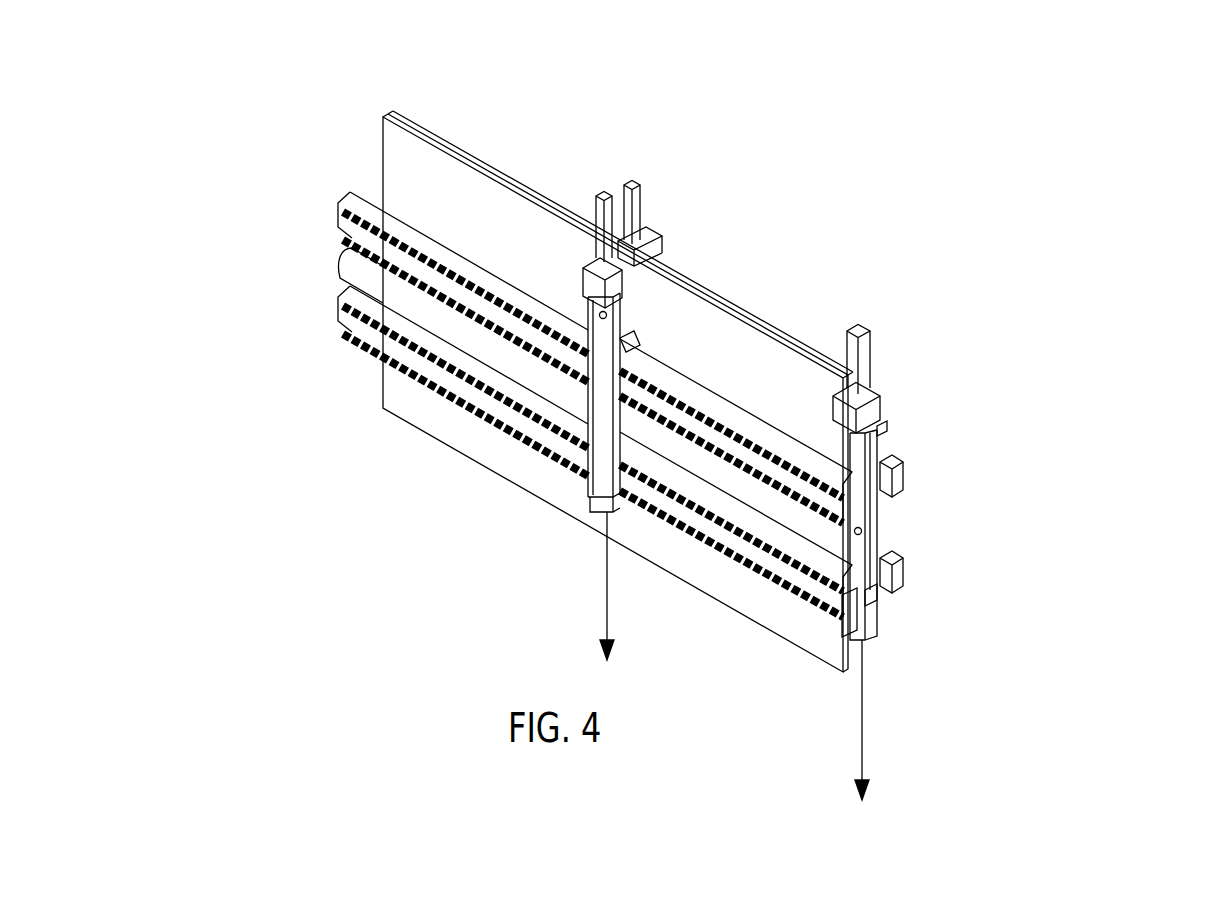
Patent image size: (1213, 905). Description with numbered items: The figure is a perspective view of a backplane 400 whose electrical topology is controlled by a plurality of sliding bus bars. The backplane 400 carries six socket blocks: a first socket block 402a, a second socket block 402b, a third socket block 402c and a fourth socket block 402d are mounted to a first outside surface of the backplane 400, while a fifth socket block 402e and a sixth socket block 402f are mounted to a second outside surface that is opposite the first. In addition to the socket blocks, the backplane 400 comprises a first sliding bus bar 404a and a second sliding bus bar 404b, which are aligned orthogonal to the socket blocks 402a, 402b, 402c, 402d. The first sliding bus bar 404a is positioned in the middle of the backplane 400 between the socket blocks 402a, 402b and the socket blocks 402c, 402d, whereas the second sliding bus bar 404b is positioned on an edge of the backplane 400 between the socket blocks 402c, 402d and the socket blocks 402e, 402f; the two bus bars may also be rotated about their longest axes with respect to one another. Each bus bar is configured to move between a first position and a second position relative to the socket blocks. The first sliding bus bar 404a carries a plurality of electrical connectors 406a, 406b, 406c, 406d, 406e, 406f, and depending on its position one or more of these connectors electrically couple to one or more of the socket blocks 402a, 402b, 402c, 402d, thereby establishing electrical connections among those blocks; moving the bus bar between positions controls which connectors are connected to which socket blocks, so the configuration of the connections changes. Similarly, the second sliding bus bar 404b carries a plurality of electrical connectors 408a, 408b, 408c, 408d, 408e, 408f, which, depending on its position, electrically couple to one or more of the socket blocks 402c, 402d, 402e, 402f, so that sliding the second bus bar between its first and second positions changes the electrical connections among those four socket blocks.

The backplane 400 is at (554, 366).
The first socket block 402a is at (405, 284).
The second socket block 402b is at (405, 378).
The third socket block 402c is at (736, 431).
The fourth socket block 402d is at (736, 550).
The fifth socket block 402e is at (1033, 476).
The sixth socket block 402f is at (1010, 572).
The first sliding bus bar 404a is at (665, 210).
The second sliding bus bar 404b is at (902, 334).
The electrical connector 406a is at (515, 441).
The electrical connector 406b is at (537, 516).
The electrical connector 406c is at (679, 279).
The electrical connector 406d is at (692, 334).
The electrical connector 406e is at (554, 267).
The electrical connector 406f is at (635, 578).
The electrical connector 408a is at (827, 377).
The electrical connector 408b is at (911, 693).
The electrical connector 408c is at (898, 388).
The electrical connector 408d is at (940, 605).
The electrical connector 408e is at (951, 412).
The electrical connector 408f is at (925, 533).